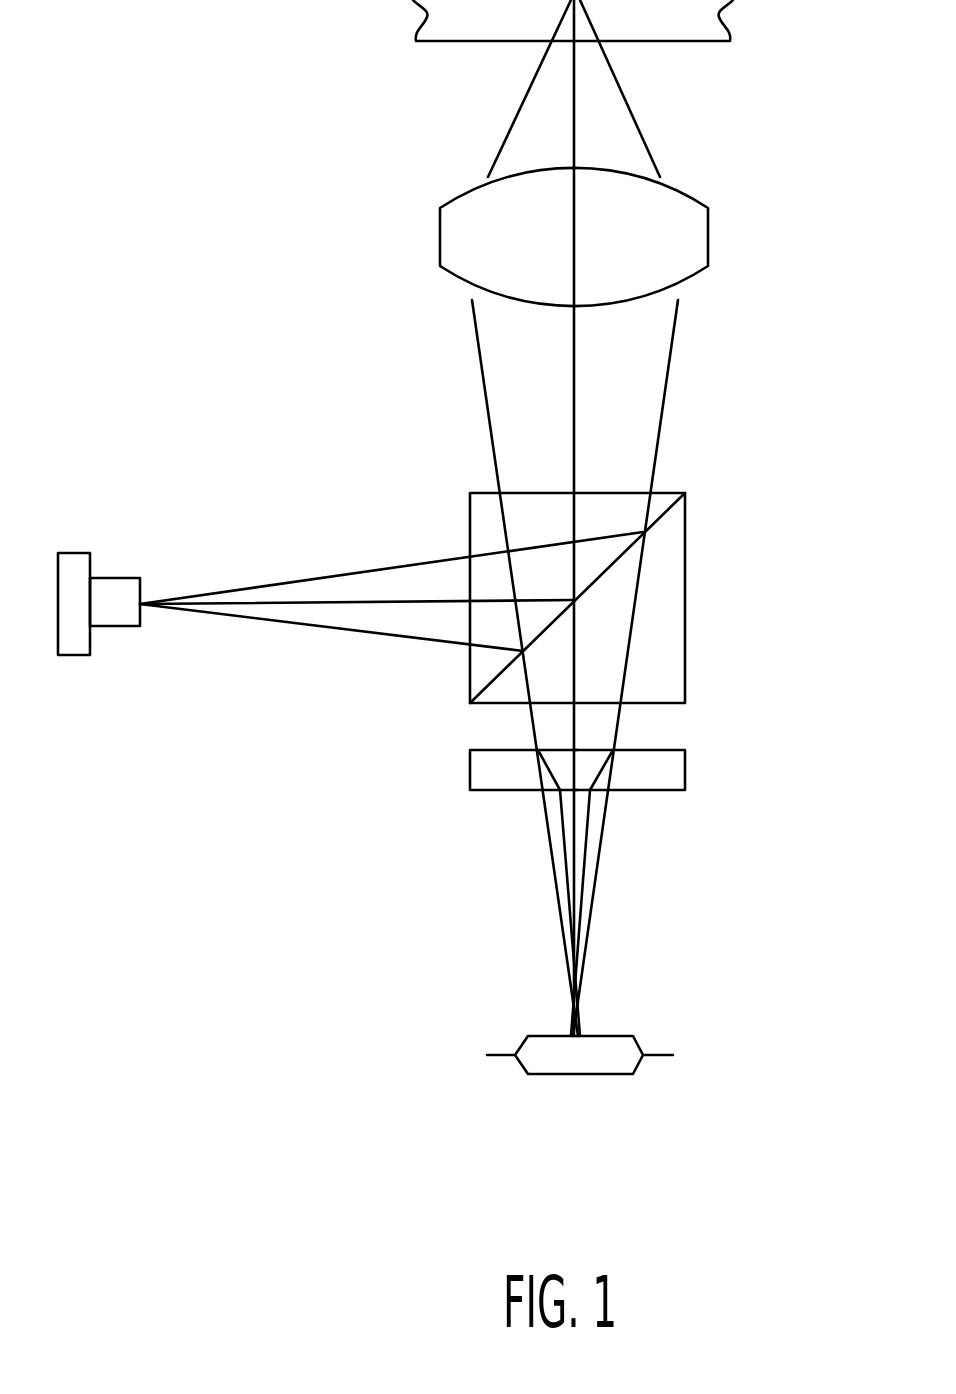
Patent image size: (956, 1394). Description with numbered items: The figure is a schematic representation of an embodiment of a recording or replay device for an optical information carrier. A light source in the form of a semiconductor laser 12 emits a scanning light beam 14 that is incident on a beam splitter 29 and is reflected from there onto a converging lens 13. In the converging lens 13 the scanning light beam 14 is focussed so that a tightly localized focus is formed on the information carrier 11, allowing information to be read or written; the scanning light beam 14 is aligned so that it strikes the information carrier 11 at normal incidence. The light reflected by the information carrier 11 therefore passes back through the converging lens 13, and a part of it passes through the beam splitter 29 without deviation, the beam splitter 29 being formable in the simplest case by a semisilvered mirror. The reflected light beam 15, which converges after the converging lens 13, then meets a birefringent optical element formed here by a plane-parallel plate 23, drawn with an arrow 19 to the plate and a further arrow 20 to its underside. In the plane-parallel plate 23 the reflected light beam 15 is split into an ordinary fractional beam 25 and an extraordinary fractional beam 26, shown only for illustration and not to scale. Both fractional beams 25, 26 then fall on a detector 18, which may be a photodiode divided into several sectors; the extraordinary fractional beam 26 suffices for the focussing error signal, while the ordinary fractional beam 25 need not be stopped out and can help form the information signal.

The information carrier 11 is at (690, 22).
The semiconductor laser 12 is at (113, 613).
The converging lens 13 is at (682, 229).
The scanning light beam 14 is at (527, 140).
The reflected light beam 15 is at (553, 727).
The detector 18 is at (585, 1063).
The optical element (plate) 19 is at (621, 757).
The first zone of optical element 20 is at (507, 795).
The plane-parallel plate 23 is at (672, 777).
The ordinary fractional beam 25 is at (593, 822).
The extraordinary fractional beam 26 is at (570, 818).
The beam splitter 29 is at (672, 563).